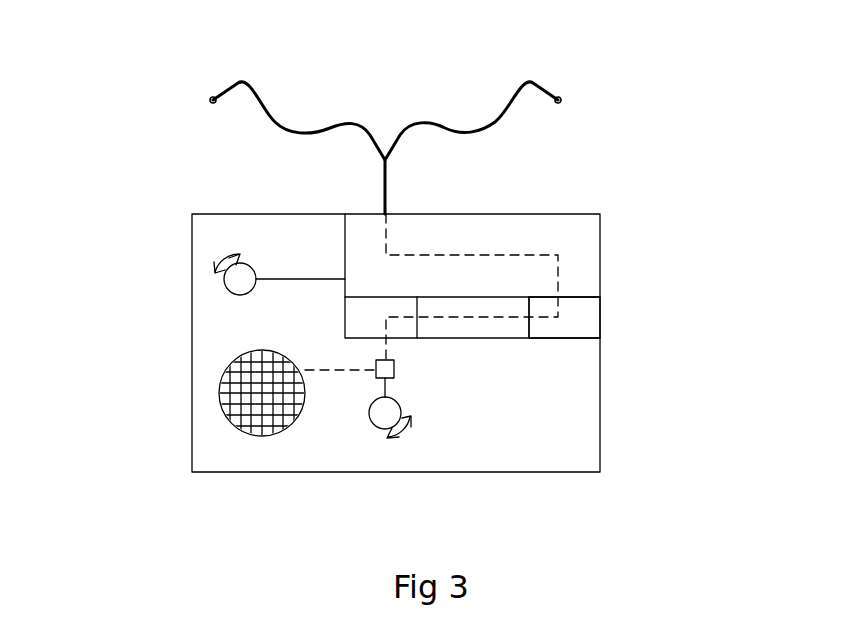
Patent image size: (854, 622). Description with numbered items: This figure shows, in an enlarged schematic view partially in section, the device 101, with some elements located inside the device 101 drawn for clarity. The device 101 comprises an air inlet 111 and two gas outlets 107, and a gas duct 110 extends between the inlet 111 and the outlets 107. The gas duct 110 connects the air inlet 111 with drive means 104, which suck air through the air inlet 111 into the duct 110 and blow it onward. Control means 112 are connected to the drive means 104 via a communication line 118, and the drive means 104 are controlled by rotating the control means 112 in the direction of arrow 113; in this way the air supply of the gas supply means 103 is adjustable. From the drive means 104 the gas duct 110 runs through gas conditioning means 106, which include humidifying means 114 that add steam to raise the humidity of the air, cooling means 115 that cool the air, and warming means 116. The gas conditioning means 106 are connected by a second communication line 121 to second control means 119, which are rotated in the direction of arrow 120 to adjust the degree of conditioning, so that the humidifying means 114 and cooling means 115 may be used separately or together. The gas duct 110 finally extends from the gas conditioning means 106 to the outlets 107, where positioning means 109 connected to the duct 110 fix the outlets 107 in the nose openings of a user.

The device 101 is at (623, 228).
The gas supply means 103 is at (517, 138).
The drive means 104 is at (395, 370).
The gas conditioning means 106 is at (488, 207).
The gas outlets 107 is at (565, 100).
The positioning means 109 is at (559, 95).
The gas duct 110 is at (392, 168).
The air inlet 111 is at (248, 420).
The control means 112 is at (377, 417).
The arrow 113 is at (407, 432).
The humidifying means 114 is at (359, 316).
The cooling means 115 is at (582, 325).
The warming means 116 is at (475, 331).
The communication line 118 is at (387, 387).
The second control means 119 is at (235, 287).
The arrow 120 is at (218, 270).
The second communication line 121 is at (319, 279).